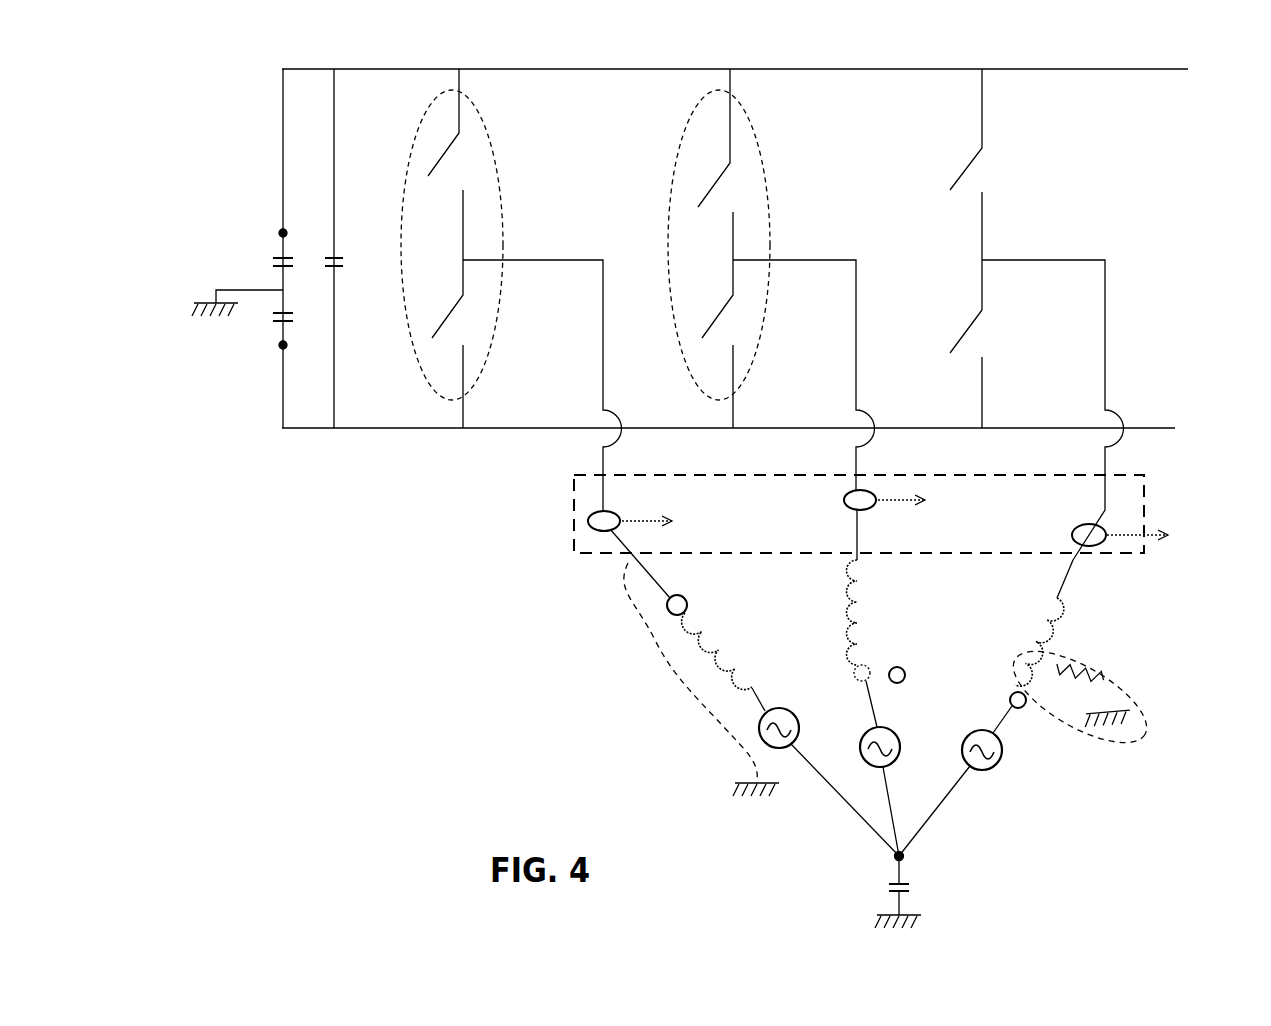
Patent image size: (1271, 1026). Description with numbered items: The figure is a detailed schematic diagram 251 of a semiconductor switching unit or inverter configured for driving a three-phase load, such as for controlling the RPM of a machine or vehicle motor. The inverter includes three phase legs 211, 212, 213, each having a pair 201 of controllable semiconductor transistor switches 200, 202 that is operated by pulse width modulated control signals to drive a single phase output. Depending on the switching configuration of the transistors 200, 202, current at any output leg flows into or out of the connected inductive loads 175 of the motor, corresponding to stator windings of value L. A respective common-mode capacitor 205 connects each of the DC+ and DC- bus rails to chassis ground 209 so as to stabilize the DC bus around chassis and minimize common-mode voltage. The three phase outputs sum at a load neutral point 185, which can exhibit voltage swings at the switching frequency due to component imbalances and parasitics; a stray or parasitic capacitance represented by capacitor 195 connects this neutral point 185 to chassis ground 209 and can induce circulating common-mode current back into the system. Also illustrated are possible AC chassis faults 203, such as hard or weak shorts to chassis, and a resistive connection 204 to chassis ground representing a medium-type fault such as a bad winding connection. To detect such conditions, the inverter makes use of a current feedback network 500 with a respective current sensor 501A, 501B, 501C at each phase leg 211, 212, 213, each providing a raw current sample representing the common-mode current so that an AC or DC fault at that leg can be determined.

The schematic diagram 251 is at (290, 38).
The common-mode capacitor 205 is at (272, 252).
The chassis ground 209 is at (248, 292).
The pair of controllable semiconductor transistor switches 201 is at (490, 143).
The controllable semiconductor transistor switch 200 is at (470, 176).
The controllable semiconductor transistor switch 202 is at (470, 333).
The phase leg 211 is at (575, 260).
The phase leg 212 is at (824, 260).
The phase leg 213 is at (1080, 260).
The current feedback network 500 is at (1033, 547).
The current sensor 501A is at (587, 521).
The current sensor 501B is at (843, 500).
The current sensor 501C is at (1072, 535).
The inductive load 175 is at (845, 650).
The AC chassis fault 203 is at (663, 648).
The resistive connection 204 is at (1095, 666).
The load neutral point 185 is at (905, 858).
The parasitic capacitor 195 is at (883, 890).